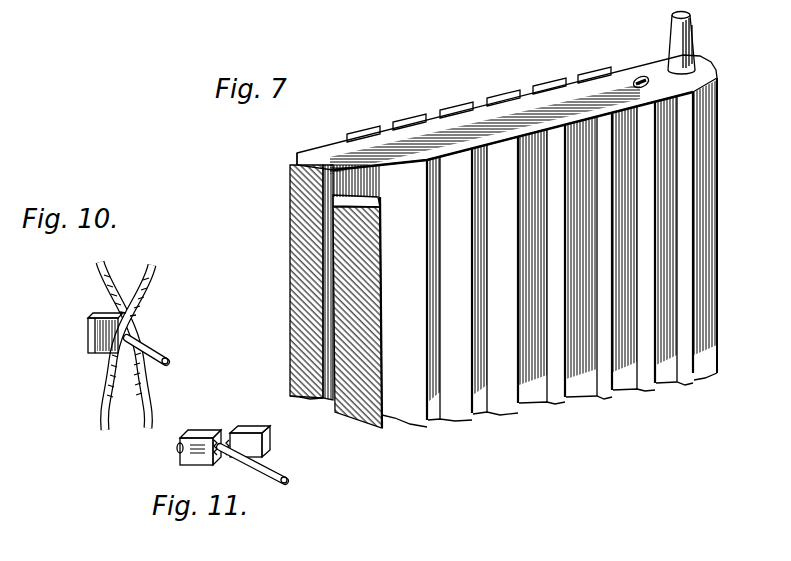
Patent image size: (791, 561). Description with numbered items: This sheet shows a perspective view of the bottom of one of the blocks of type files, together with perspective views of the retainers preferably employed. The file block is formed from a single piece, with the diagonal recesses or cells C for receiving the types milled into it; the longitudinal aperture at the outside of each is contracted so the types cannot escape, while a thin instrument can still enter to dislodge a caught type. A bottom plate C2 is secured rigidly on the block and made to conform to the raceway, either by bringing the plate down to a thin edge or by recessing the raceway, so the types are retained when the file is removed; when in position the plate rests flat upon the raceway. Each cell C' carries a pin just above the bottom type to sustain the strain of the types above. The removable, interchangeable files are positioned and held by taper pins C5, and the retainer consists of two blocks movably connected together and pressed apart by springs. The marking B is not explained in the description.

The bottom plate C2 is at (507, 114).
The taper pin C5 is at (693, 32).
The end block slot B is at (336, 290).
The cell C' is at (565, 257).
The recesses or cells C is at (719, 229).